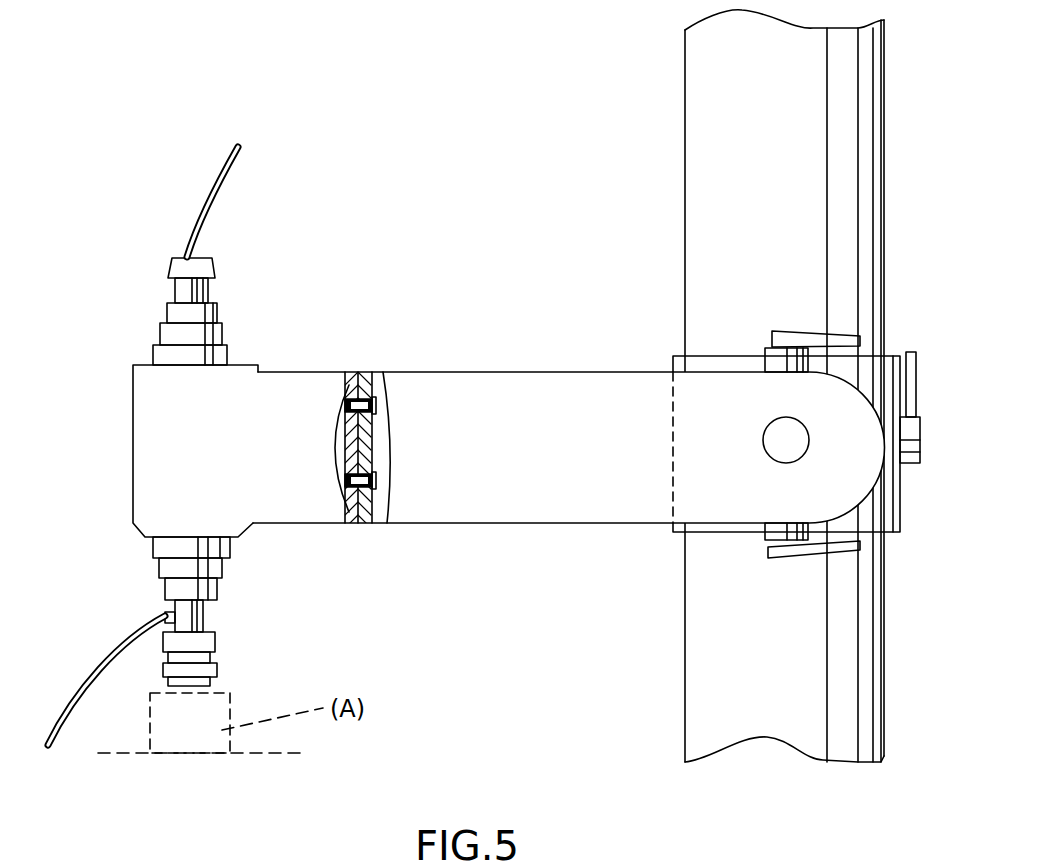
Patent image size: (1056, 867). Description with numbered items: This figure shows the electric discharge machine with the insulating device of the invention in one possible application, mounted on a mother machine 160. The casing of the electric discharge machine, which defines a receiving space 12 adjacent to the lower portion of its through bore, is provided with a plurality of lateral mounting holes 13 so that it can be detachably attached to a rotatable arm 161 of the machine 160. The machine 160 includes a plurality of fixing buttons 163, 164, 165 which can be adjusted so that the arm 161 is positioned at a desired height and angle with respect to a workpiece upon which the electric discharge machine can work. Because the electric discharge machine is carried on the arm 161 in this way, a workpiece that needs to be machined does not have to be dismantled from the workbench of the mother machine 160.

The receiving space 12 is at (334, 448).
The lateral mounting holes 13 is at (347, 398).
The machine 160 is at (676, 155).
The rotatable arm 161 is at (480, 377).
The fixing button 163 is at (922, 430).
The fixing button 164 is at (793, 562).
The fixing button 165 is at (790, 328).